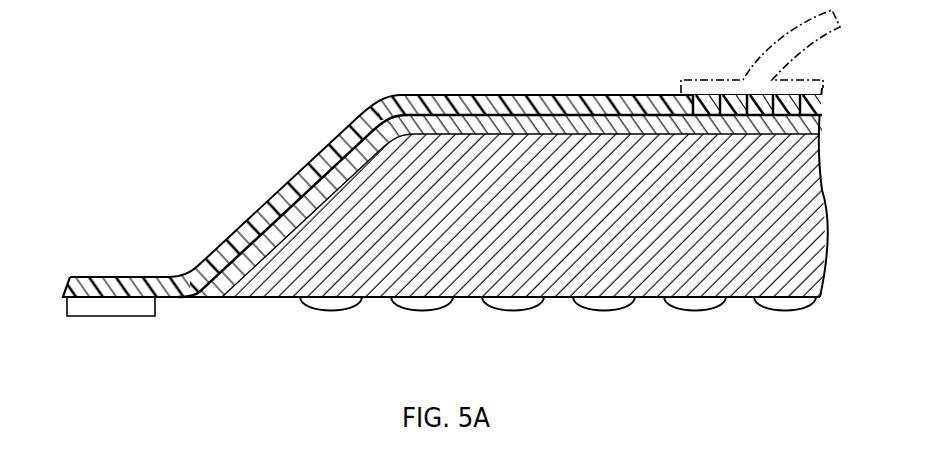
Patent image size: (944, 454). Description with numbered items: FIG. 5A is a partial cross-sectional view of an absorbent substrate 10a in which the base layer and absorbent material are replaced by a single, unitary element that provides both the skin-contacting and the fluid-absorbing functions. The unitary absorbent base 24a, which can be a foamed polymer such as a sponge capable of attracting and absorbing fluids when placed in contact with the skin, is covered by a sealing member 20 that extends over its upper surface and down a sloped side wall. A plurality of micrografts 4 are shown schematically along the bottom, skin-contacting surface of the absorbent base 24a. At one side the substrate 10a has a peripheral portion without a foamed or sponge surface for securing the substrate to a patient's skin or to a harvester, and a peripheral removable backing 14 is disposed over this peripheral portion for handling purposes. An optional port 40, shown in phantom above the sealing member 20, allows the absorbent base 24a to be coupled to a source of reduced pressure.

The substrate 10a is at (205, 77).
The sealing member 20 is at (268, 200).
The absorbent base 24a is at (457, 143).
The peripheral removable backing 14 is at (125, 312).
The micrografts 4 is at (308, 304).
The port 40 is at (681, 78).